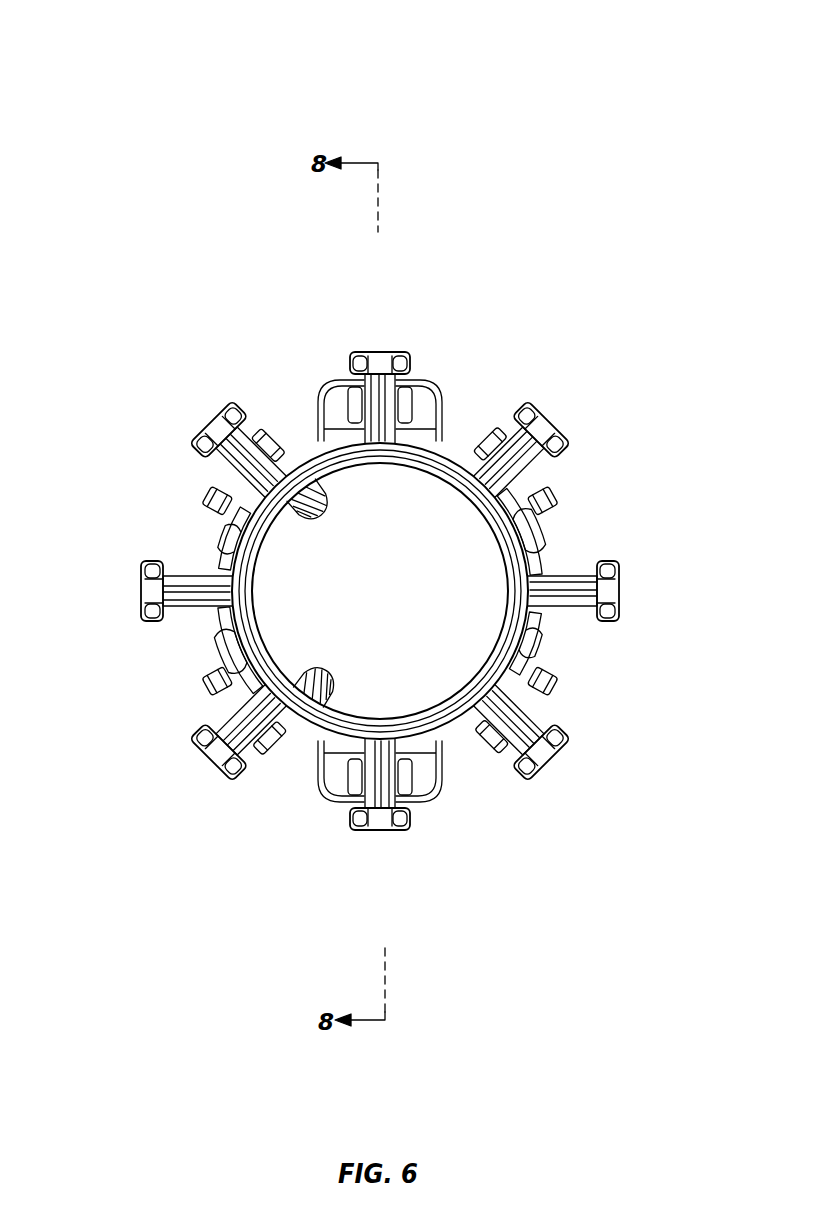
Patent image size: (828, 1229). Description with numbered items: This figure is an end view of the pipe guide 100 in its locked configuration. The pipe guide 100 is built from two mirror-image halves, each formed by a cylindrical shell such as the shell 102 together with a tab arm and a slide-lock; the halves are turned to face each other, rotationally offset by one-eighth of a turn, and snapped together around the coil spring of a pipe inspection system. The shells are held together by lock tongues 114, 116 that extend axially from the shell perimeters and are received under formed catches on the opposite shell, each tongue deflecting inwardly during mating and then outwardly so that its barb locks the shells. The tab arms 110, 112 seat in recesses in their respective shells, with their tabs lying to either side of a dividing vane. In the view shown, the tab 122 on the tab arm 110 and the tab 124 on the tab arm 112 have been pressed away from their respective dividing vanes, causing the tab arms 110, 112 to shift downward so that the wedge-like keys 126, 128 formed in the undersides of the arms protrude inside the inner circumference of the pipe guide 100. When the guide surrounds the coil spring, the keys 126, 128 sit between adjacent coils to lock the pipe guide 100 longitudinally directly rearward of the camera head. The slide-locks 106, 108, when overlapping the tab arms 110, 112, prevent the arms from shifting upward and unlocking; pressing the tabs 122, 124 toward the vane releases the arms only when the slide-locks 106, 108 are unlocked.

The pipe guide 100 is at (372, 70).
The cylindrical shell 102 is at (383, 332).
The slide-lock 106 is at (447, 773).
The slide-lock 108 is at (468, 408).
The tab arm 110 is at (293, 437).
The tab arm 112 is at (283, 727).
The lock tongue 114 is at (543, 507).
The lock tongue 116 is at (218, 664).
The tab 122 is at (210, 497).
The tab 124 is at (228, 683).
The key 126 is at (314, 508).
The key 128 is at (318, 682).